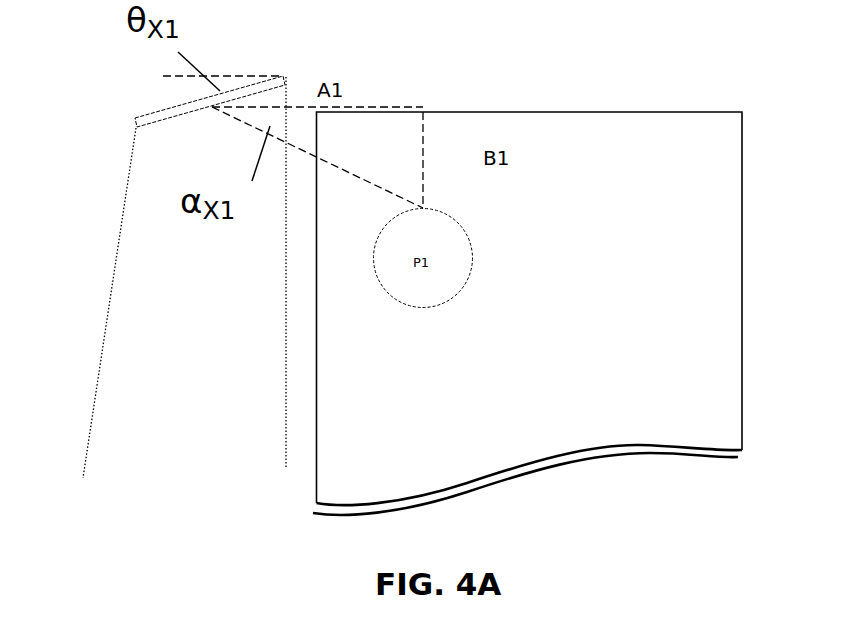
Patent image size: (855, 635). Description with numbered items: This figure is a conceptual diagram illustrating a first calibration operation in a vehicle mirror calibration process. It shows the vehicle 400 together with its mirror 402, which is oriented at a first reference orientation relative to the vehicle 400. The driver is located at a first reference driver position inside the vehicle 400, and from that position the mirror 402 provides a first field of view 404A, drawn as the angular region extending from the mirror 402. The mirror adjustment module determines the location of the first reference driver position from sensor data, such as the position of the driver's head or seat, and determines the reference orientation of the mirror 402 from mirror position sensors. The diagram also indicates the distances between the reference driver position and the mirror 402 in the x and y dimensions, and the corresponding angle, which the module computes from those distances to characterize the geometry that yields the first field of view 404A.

The vehicle 400 is at (628, 111).
The mirror 402 is at (132, 120).
The first field of view 404A is at (277, 500).